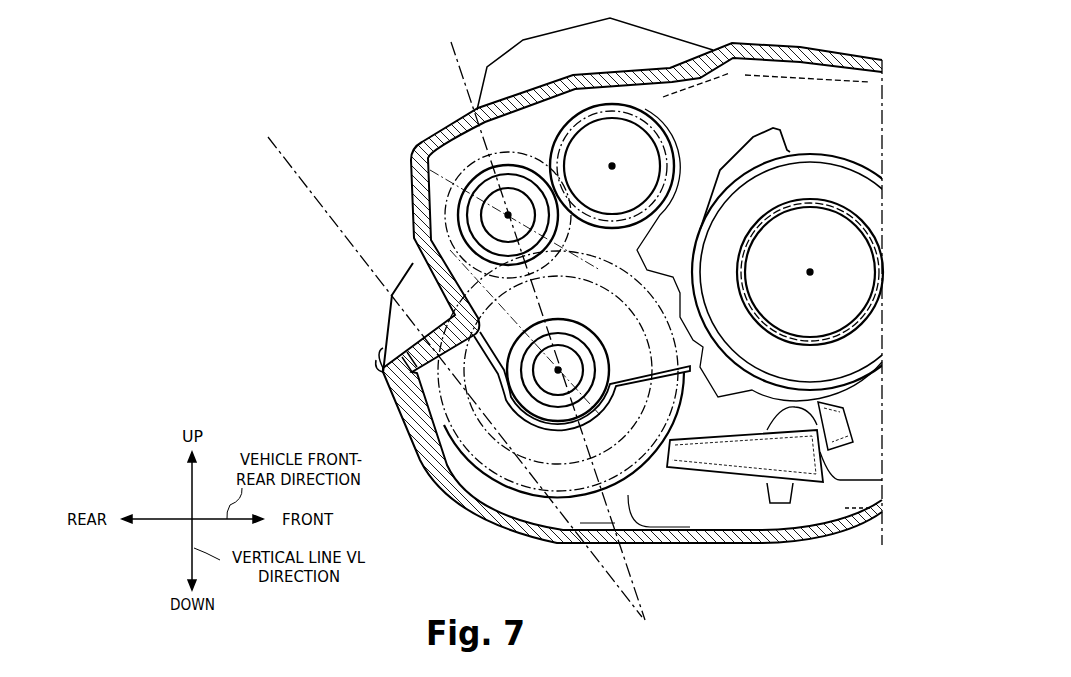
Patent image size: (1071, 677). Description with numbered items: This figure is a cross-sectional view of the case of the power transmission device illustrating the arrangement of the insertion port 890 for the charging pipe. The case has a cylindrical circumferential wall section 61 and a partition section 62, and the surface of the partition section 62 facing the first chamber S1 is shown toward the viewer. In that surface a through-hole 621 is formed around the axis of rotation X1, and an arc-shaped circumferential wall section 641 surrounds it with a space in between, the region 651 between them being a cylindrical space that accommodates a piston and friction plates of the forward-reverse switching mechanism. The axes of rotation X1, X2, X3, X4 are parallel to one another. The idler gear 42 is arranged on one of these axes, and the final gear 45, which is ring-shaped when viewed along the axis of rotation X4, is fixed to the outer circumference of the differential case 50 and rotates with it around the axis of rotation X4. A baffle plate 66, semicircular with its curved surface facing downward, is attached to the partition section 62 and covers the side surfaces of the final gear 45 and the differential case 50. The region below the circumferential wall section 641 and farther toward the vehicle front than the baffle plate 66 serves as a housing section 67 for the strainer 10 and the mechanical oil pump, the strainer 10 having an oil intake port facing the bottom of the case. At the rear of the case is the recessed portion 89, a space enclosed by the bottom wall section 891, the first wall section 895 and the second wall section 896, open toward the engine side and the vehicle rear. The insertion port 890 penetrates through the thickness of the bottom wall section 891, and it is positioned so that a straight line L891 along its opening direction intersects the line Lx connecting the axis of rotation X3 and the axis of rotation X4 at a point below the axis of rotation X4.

The strainer 10 is at (742, 490).
The idler gear 42 is at (558, 178).
The final gear 45 is at (680, 283).
The differential case 50 is at (693, 330).
The circumferential wall section 61 is at (758, 62).
The partition section 62 is at (813, 97).
The baffle plate 66 is at (487, 473).
The housing section 67 is at (697, 510).
The recessed portion 89 is at (335, 311).
The insertion port 890 is at (383, 355).
The bottom wall section 891 is at (405, 365).
The first wall section 895 is at (413, 262).
The second wall section 896 is at (395, 320).
The through-hole 621 is at (835, 250).
The circumferential wall section 641 is at (816, 152).
The region 651 is at (835, 192).
The axis of rotation X1 is at (810, 272).
The axis of rotation X2 is at (612, 166).
The axis of rotation X3 is at (508, 215).
The axis of rotation X4 is at (558, 370).
The line Lx is at (539, 317).
The straight line L891 is at (432, 360).
The first chamber S1 is at (770, 113).